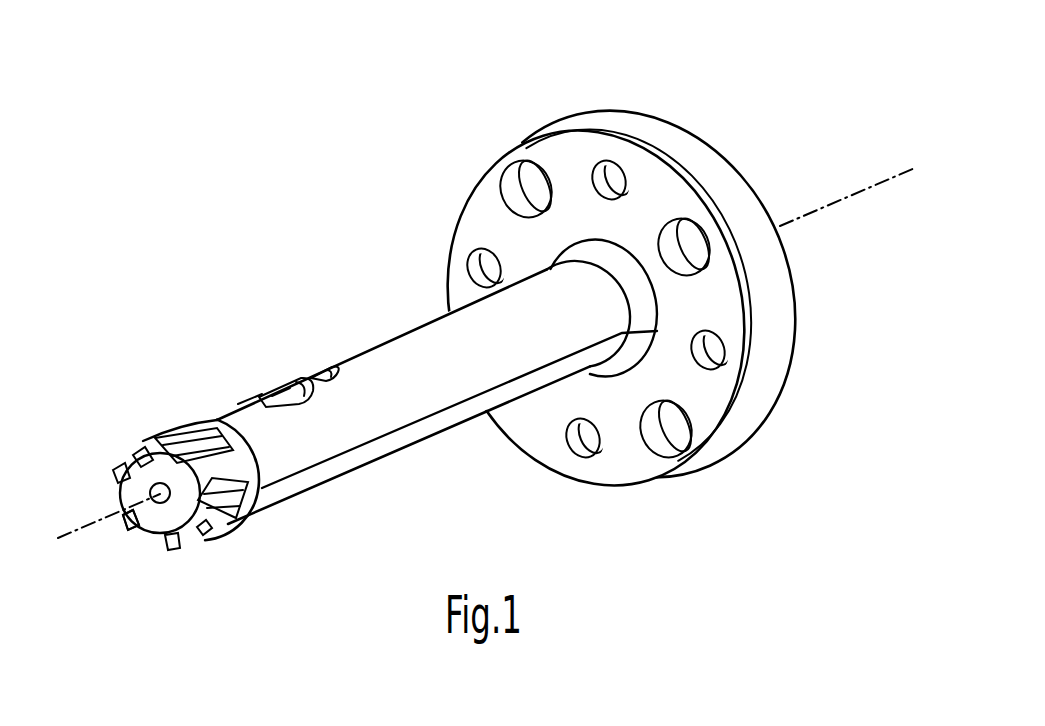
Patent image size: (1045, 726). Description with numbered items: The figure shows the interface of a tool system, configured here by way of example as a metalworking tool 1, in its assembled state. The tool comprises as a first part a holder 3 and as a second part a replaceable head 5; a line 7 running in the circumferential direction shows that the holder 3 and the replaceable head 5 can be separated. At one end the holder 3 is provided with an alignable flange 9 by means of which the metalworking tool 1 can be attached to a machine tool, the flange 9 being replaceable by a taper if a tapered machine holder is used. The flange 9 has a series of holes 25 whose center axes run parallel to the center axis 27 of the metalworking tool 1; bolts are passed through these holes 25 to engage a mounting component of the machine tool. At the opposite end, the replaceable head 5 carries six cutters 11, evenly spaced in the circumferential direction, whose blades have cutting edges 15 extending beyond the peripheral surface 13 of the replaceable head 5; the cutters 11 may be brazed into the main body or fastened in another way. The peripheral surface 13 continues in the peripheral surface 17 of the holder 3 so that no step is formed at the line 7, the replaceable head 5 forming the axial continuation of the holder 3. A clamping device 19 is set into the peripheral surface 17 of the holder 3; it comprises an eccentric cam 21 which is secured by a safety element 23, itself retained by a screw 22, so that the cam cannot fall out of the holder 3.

The metalworking tool 1 is at (481, 359).
The holder 3 is at (427, 353).
The replaceable head 5 is at (130, 465).
The line 7 is at (236, 406).
The flange 9 is at (573, 284).
The cutters 11 is at (183, 542).
The peripheral surface of the replaceable head 13 is at (198, 422).
The cutting edges 15 is at (130, 528).
The peripheral surface of the holder 17 is at (253, 395).
The clamping device 19 is at (301, 349).
The eccentric cam 21 is at (271, 387).
The screw 22 is at (331, 362).
The safety element 23 is at (321, 338).
The holes 25 is at (686, 248).
The center axis 27 is at (73, 532).